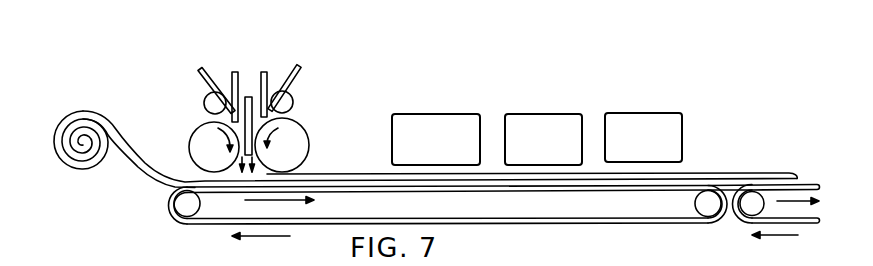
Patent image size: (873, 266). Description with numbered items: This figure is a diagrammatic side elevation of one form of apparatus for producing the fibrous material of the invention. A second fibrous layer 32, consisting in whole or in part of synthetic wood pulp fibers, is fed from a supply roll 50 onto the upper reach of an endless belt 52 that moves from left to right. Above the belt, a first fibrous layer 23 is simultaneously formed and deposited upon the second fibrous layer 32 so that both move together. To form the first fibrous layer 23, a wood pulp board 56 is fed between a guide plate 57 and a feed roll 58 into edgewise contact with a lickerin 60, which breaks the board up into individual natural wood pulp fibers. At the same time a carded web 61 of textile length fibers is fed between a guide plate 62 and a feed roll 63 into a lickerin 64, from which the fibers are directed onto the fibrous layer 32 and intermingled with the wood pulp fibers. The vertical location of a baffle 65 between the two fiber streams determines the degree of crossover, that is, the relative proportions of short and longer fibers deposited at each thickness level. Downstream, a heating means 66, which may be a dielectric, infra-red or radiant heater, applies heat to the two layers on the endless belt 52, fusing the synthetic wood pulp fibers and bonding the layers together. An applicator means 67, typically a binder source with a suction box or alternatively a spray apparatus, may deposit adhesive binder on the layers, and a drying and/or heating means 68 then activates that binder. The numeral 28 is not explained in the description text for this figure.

The first fibrous layer 23 is at (503, 194).
The apparatus 28 is at (564, 6).
The second fibrous layer 32 is at (147, 177).
The supply roll 50 is at (83, 140).
The endless belt 52 is at (180, 223).
The wood pulp board 56 is at (198, 79).
The guide plate 57 is at (234, 73).
The feed roll 58 is at (204, 100).
The lickerin 60 is at (189, 146).
The carded web 61 is at (300, 68).
The guide plate 62 is at (266, 88).
The feed roll 63 is at (294, 102).
The lickerin 64 is at (306, 129).
The baffle 65 is at (249, 97).
The heating means 66 is at (443, 146).
The applicator means 67 is at (555, 151).
The means 68 is at (651, 148).